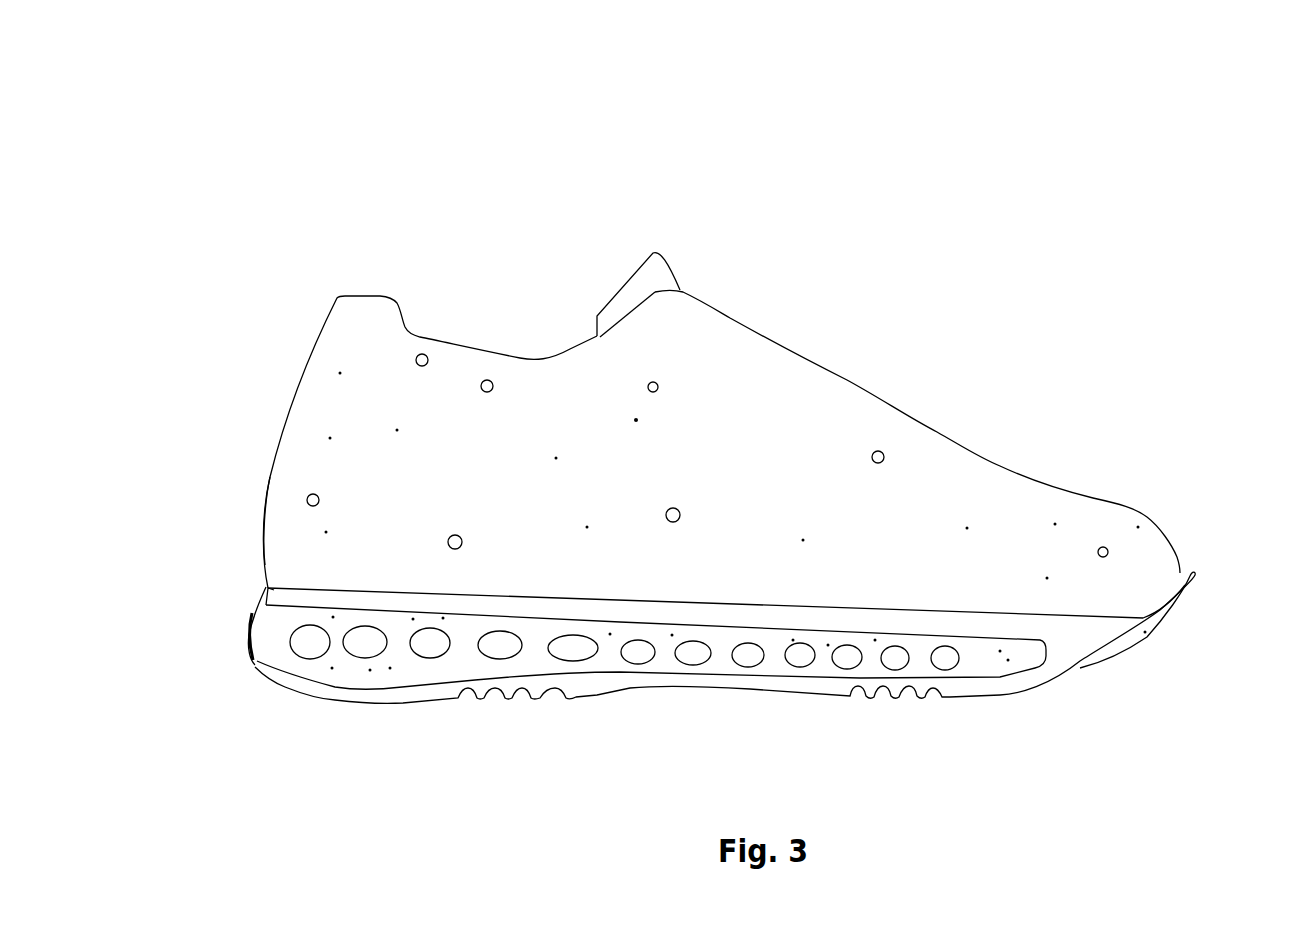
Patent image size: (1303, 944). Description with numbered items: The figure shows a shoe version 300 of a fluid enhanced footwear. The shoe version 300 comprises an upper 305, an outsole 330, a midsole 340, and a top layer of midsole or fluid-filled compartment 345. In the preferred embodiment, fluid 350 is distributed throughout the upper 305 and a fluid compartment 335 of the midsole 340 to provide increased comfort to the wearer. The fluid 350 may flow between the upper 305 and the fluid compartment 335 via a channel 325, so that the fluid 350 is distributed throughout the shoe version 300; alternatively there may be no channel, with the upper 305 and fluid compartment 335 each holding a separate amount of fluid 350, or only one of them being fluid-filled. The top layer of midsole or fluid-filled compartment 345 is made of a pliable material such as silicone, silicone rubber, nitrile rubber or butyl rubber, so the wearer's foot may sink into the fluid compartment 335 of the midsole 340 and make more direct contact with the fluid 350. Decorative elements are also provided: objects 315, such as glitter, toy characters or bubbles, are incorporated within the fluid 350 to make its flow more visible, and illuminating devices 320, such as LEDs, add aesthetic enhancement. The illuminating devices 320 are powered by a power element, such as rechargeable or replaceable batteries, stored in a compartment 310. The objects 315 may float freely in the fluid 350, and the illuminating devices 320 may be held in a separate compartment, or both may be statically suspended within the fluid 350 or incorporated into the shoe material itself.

The shoe version 300 is at (351, 104).
The upper 305 is at (330, 400).
The compartment 310 is at (627, 275).
The objects 315 is at (770, 435).
The illuminating devices 320 is at (1104, 549).
The channel 325 is at (1182, 570).
The outsole 330 is at (1097, 667).
The fluid compartment 335 is at (410, 673).
The midsole 340 is at (253, 657).
The top layer of midsole or fluid-filled compartment 345 is at (268, 590).
The fluid 350 is at (295, 450).